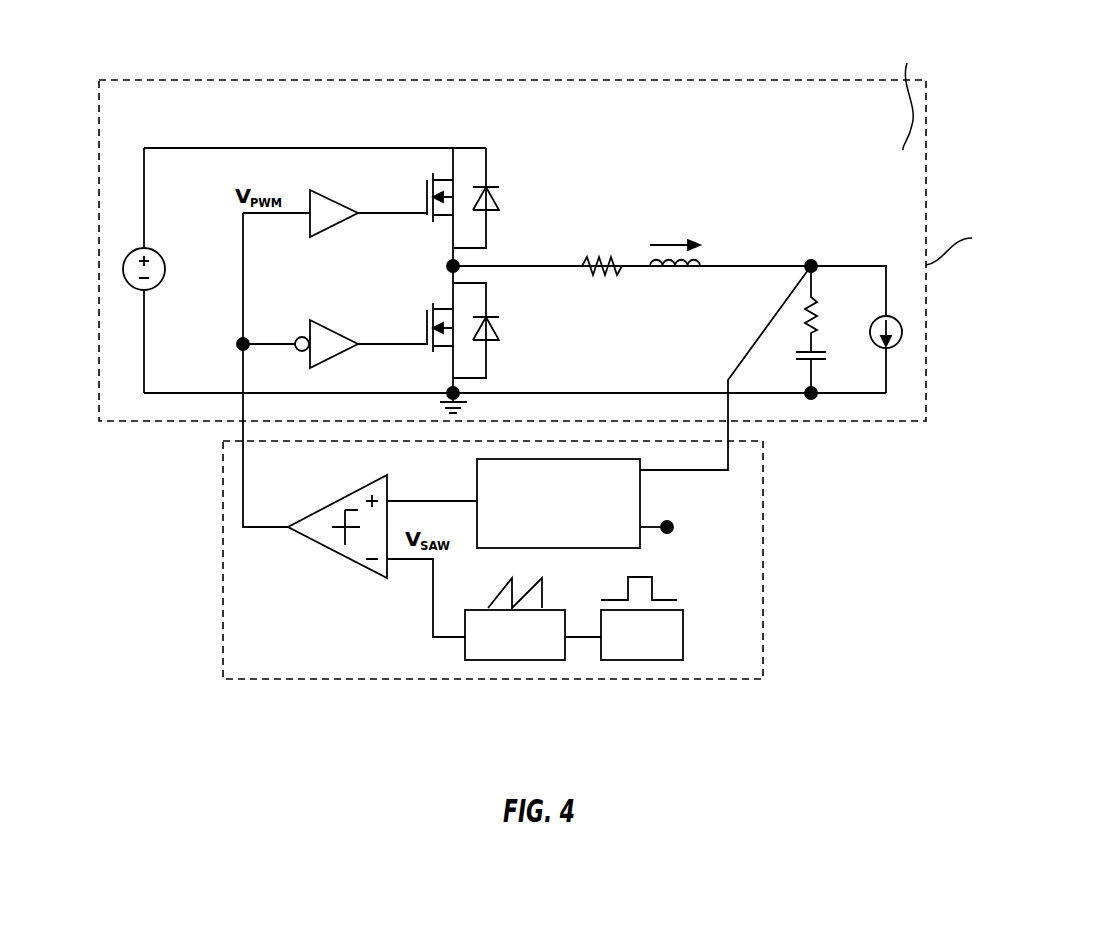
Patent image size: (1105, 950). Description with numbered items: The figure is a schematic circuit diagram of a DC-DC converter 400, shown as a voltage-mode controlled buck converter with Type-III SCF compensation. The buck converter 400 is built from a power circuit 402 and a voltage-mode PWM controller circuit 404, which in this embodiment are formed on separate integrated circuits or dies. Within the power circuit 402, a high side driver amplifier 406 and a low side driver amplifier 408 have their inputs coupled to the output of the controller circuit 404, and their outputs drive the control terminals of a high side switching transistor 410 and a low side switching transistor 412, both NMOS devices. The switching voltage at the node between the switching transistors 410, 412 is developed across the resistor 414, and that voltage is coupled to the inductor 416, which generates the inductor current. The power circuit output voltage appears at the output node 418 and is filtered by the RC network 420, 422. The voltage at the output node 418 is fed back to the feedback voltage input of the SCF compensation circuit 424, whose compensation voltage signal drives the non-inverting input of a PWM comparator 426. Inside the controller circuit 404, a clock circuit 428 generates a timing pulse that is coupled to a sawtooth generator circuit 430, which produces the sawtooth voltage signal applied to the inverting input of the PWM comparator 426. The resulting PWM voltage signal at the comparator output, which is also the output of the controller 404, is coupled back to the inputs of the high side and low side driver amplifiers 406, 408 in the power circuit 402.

The DC-DC converter 400 is at (808, 192).
The power circuit 402 is at (1010, 212).
The voltage-mode PWM controller circuit 404 is at (763, 572).
The high side driver amplifier 406 is at (398, 168).
The low side driver amplifier 408 is at (372, 294).
The high side switching transistor 410 is at (560, 160).
The low side switching transistor 412 is at (558, 358).
The resistor RL 414 is at (603, 262).
The inductor L 416 is at (700, 262).
The output node VOUT 418 is at (814, 262).
The RC network 420 is at (847, 308).
The RC network 422 is at (863, 368).
The SCF compensation circuit 424 is at (642, 545).
The PWM comparator 426 is at (308, 540).
The clock circuit 428 is at (657, 658).
The sawtooth generator circuit 430 is at (533, 658).